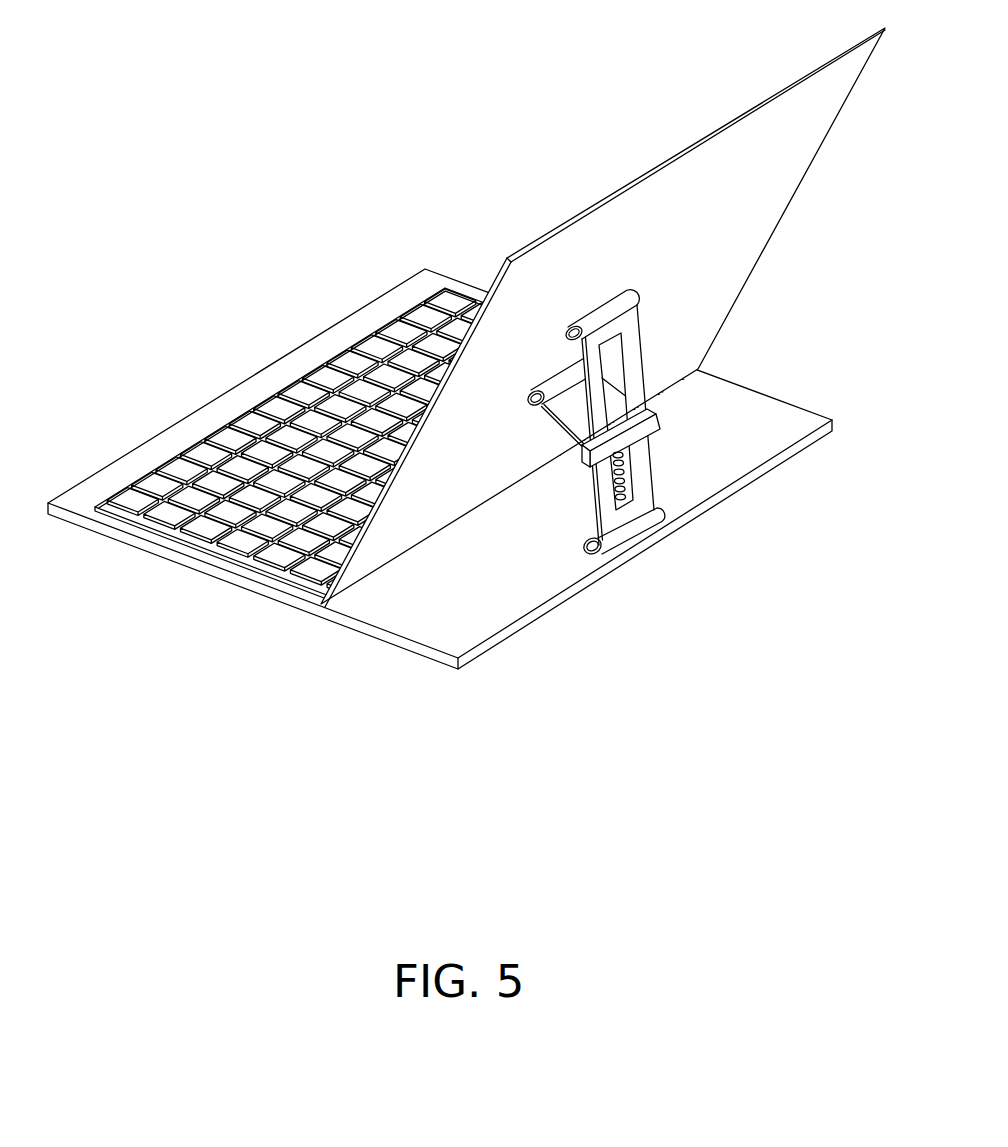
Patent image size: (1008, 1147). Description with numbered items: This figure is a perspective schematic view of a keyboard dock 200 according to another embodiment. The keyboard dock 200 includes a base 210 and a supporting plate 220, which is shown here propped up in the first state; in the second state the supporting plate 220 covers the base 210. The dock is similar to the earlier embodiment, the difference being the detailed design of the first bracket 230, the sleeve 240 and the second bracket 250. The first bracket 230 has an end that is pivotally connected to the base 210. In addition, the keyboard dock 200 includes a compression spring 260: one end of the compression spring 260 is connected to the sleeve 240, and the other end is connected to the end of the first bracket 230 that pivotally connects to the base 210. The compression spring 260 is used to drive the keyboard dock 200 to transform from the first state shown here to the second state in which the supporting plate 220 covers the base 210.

The keyboard dock 200 is at (466, 396).
The base 210 is at (423, 622).
The supporting plate 220 is at (713, 288).
The first bracket 230 is at (600, 498).
The sleeve 240 is at (652, 420).
The second bracket 250 is at (565, 413).
The compression spring 260 is at (627, 477).